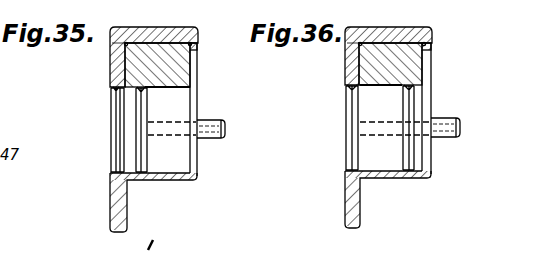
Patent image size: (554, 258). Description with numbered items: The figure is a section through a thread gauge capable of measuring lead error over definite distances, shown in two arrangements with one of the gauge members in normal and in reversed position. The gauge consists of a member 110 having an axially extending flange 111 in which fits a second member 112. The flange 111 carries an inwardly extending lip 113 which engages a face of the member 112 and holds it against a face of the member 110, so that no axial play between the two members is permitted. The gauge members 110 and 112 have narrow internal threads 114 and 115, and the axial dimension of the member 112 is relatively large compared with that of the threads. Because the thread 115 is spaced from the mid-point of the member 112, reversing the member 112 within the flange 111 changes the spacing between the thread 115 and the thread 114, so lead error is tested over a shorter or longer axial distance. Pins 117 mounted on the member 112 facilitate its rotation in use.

In FIG. 35, the member 110 is at (113, 57).
In FIG. 36, the member 110 is at (352, 60).
In FIG. 35, the axially extending flange 111 is at (167, 37).
In FIG. 36, the axially extending flange 111 is at (408, 35).
In FIG. 35, the second member 112 is at (140, 68).
In FIG. 36, the second member 112 is at (410, 70).
In FIG. 35, the inwardly extending lip 113 is at (212, 63).
In FIG. 36, the inwardly extending lip 113 is at (432, 46).
In FIG. 35, the internal thread 114 is at (118, 145).
In FIG. 36, the internal thread 114 is at (352, 104).
In FIG. 35, the internal thread 115 is at (145, 152).
In FIG. 36, the internal thread 115 is at (409, 100).
In FIG. 35, the pins 117 is at (215, 122).
In FIG. 36, the pins 117 is at (452, 140).